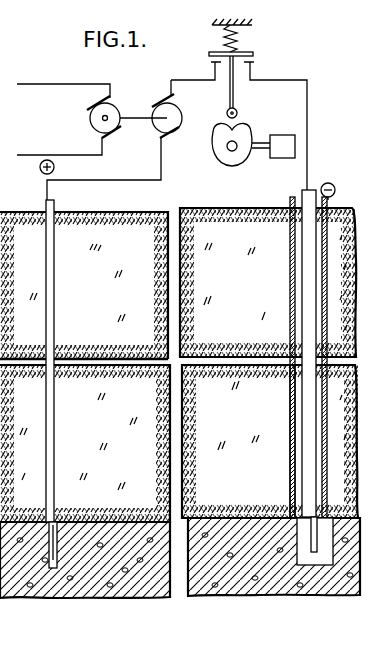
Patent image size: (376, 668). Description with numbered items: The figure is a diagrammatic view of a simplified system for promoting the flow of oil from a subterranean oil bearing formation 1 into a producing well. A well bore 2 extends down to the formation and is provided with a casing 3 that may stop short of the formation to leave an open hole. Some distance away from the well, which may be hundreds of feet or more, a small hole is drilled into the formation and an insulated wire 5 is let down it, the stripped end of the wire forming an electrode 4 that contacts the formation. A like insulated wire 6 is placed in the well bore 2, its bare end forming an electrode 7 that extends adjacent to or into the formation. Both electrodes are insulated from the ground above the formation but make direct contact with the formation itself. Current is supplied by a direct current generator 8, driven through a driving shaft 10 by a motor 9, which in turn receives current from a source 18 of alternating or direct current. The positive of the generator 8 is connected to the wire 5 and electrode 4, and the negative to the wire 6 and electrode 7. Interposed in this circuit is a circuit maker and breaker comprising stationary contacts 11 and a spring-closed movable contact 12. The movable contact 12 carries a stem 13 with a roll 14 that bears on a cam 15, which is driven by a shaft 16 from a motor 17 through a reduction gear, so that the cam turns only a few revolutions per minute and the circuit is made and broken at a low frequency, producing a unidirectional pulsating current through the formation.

The subterranean oil bearing formation 1 is at (134, 514).
The well bore 2 is at (297, 273).
The casing 3 is at (294, 416).
The electrode 4 is at (58, 550).
The insulated wire 5 is at (54, 320).
The insulated wire 6 is at (305, 316).
The electrode 7 is at (311, 545).
The direct current generator 8 is at (180, 108).
The motor 9 is at (89, 120).
The driving shaft 10 is at (128, 112).
The stationary contacts 11 is at (210, 66).
The spring-closed movable contact 12 is at (241, 52).
The stem 13 is at (236, 95).
The roll 14 is at (238, 113).
The cam 15 is at (213, 148).
The shaft 16 is at (258, 156).
The motor 17 is at (284, 159).
The source 18 is at (46, 87).